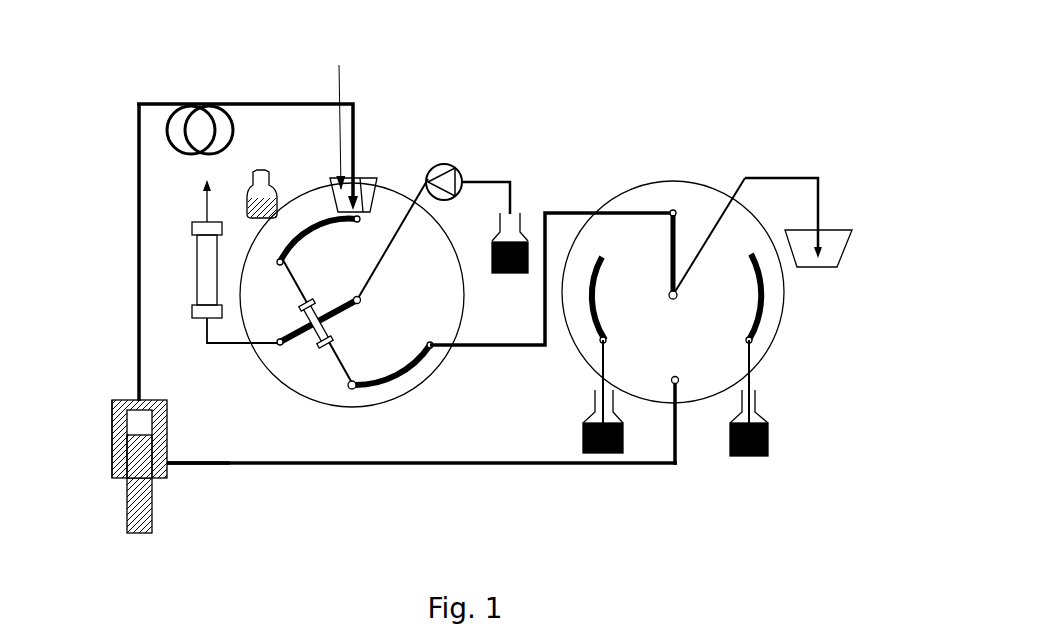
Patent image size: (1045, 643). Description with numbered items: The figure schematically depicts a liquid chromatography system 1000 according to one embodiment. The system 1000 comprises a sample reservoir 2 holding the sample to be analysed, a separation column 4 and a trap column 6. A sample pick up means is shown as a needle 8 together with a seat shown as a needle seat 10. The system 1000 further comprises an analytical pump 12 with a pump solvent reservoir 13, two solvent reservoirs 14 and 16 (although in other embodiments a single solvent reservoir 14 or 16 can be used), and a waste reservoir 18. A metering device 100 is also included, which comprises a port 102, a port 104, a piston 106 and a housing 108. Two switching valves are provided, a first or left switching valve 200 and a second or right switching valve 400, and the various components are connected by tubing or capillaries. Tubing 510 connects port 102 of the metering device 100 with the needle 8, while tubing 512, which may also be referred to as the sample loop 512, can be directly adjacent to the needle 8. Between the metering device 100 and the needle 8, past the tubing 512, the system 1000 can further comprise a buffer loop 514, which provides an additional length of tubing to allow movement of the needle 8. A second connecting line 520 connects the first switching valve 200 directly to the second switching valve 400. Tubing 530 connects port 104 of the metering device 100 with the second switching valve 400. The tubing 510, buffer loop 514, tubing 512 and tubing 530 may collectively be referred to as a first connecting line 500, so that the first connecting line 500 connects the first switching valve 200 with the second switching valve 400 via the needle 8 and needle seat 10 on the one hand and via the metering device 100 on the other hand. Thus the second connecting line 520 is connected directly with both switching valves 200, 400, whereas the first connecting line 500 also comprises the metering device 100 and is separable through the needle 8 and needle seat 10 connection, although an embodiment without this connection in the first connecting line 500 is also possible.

The liquid chromatography system 1000 is at (841, 385).
The metering device 100 is at (183, 540).
The port 102 is at (127, 411).
The port 104 is at (166, 465).
The piston 106 is at (125, 514).
The housing 108 is at (110, 468).
The tubing 510 is at (137, 214).
The tubing 512 is at (292, 102).
The buffer loop 514 is at (170, 106).
The sample reservoir 2 is at (258, 167).
The separation column 4 is at (190, 273).
The trap column 6 is at (321, 355).
The needle 8 is at (338, 114).
The needle seat 10 is at (375, 176).
The analytical pump 12 is at (457, 165).
The pump solvent reservoir 13 is at (512, 277).
The solvent reservoir 14 is at (601, 468).
The solvent reservoir 16 is at (754, 470).
The waste reservoir 18 is at (845, 224).
The first switching valve 200 is at (432, 304).
The second switching valve 400 is at (652, 345).
The first connecting line 500 is at (411, 457).
The second connecting line 520 is at (585, 211).
The tubing 530 is at (480, 467).